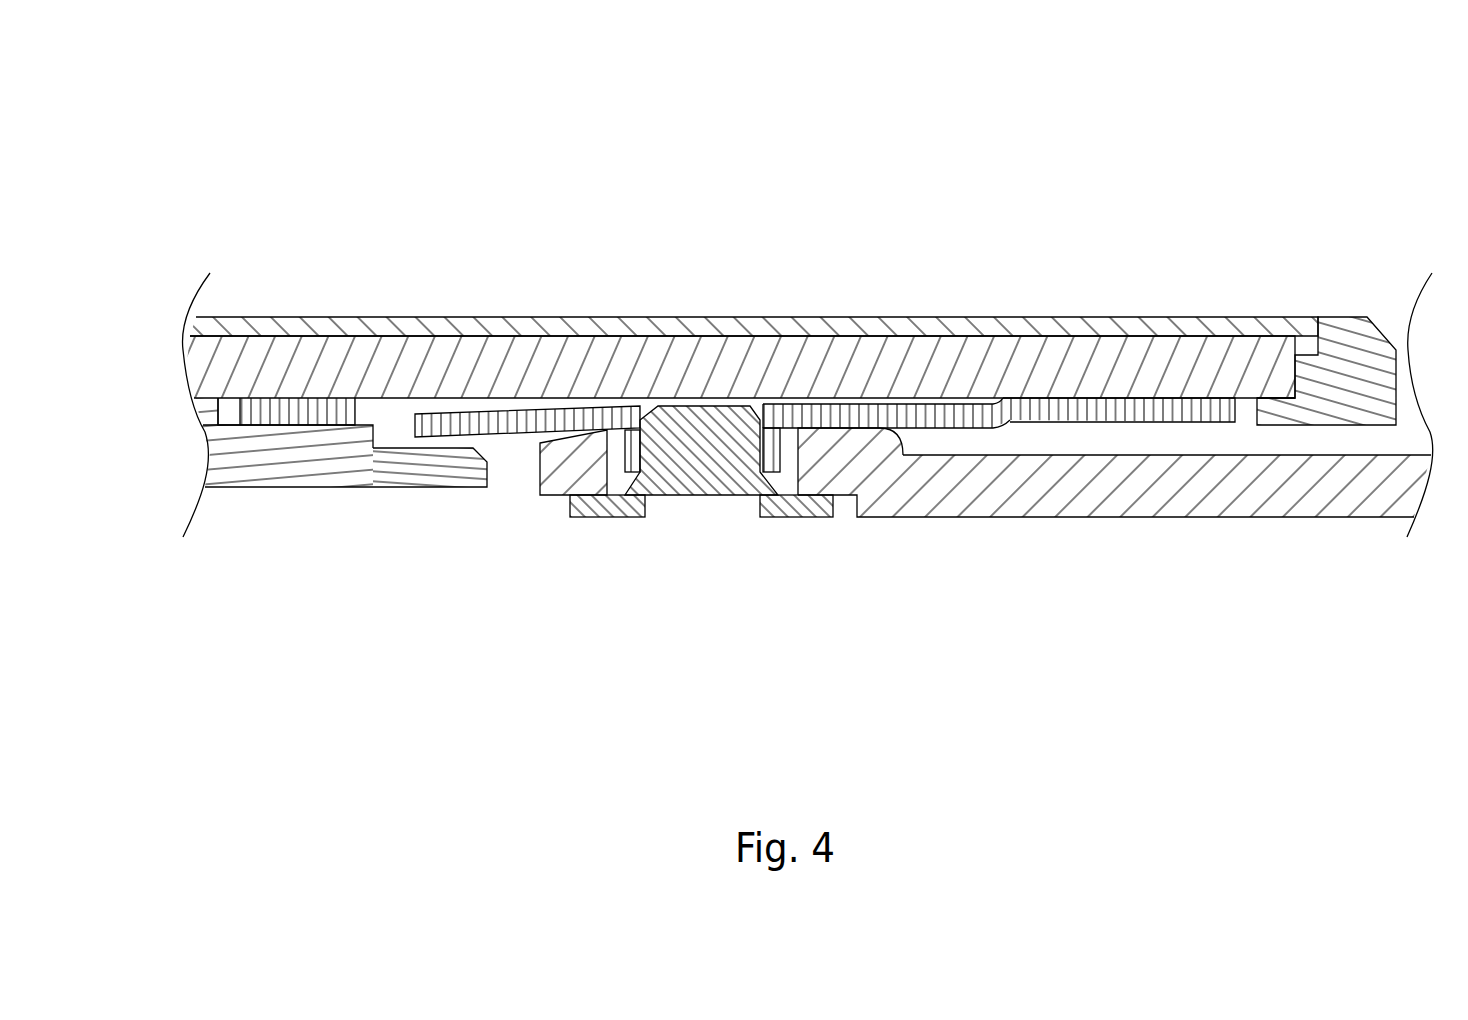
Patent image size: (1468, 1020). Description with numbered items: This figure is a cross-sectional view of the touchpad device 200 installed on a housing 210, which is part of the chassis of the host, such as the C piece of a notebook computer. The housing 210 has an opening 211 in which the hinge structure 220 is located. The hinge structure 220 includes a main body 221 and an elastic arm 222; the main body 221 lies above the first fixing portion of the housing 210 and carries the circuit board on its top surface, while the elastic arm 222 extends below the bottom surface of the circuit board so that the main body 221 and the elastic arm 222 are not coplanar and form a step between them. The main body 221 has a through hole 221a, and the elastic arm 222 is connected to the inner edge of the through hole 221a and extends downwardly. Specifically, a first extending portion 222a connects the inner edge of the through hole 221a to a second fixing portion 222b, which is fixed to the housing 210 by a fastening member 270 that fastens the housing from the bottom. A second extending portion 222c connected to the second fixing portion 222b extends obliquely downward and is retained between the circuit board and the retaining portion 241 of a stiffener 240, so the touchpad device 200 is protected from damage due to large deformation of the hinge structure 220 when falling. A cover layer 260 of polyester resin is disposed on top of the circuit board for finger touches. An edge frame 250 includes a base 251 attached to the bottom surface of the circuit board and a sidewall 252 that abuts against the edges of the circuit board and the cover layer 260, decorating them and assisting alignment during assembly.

The touchpad device 200 is at (187, 79).
The housing 210 is at (1208, 480).
The opening 211 is at (825, 455).
The hinge structure 220 is at (966, 470).
The main body 221 is at (1103, 410).
The through hole 221a is at (397, 418).
The elastic arm 222 is at (757, 222).
The first extending portion 222a is at (833, 417).
The second fixing portion 222b is at (640, 440).
The second extending portion 222c is at (568, 422).
The stiffener 240 is at (230, 455).
The retaining portion 241 is at (455, 470).
The edge frame 250 is at (258, 363).
The base 251 is at (1273, 417).
The sidewall 252 is at (1355, 370).
The cover layer 260 is at (368, 332).
The fastening member 270 is at (700, 462).